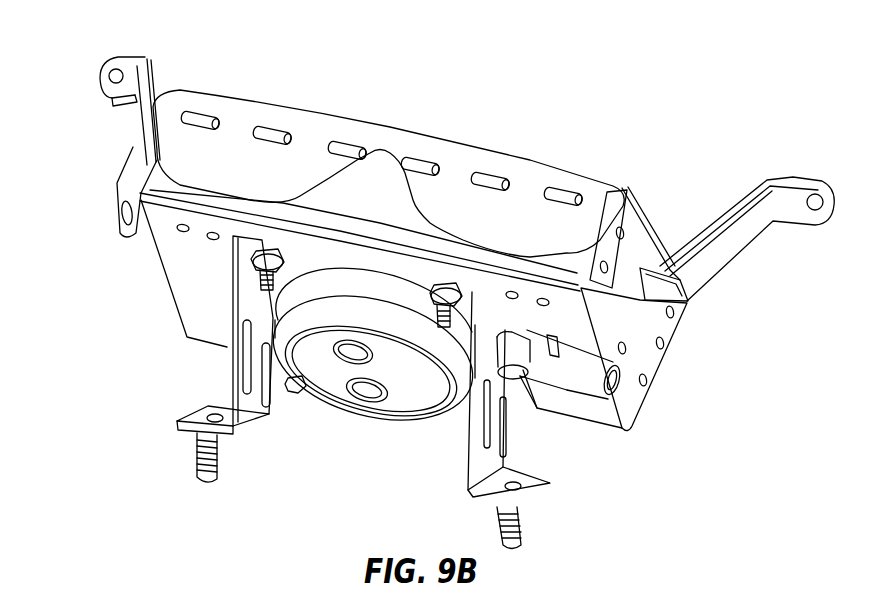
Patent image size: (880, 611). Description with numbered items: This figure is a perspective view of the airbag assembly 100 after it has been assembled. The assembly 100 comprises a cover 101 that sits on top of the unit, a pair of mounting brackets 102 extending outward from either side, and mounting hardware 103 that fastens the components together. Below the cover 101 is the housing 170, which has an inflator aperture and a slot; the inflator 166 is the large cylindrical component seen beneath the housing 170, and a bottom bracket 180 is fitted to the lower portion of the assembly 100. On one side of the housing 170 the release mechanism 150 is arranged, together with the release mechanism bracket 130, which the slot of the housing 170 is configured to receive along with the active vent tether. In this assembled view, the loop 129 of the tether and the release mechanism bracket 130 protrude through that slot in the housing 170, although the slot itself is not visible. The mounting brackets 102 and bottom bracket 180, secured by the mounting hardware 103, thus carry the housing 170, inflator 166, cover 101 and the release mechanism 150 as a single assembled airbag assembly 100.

The airbag assembly 100 is at (532, 112).
The cover 101 is at (538, 163).
The mounting brackets 102 is at (100, 74).
The mounting hardware 103 is at (255, 259).
The loop 129 is at (533, 353).
The release mechanism bracket 130 is at (601, 378).
The release mechanism 150 is at (587, 341).
The inflator 166 is at (330, 405).
The housing 170 is at (645, 240).
The bottom bracket 180 is at (224, 368).